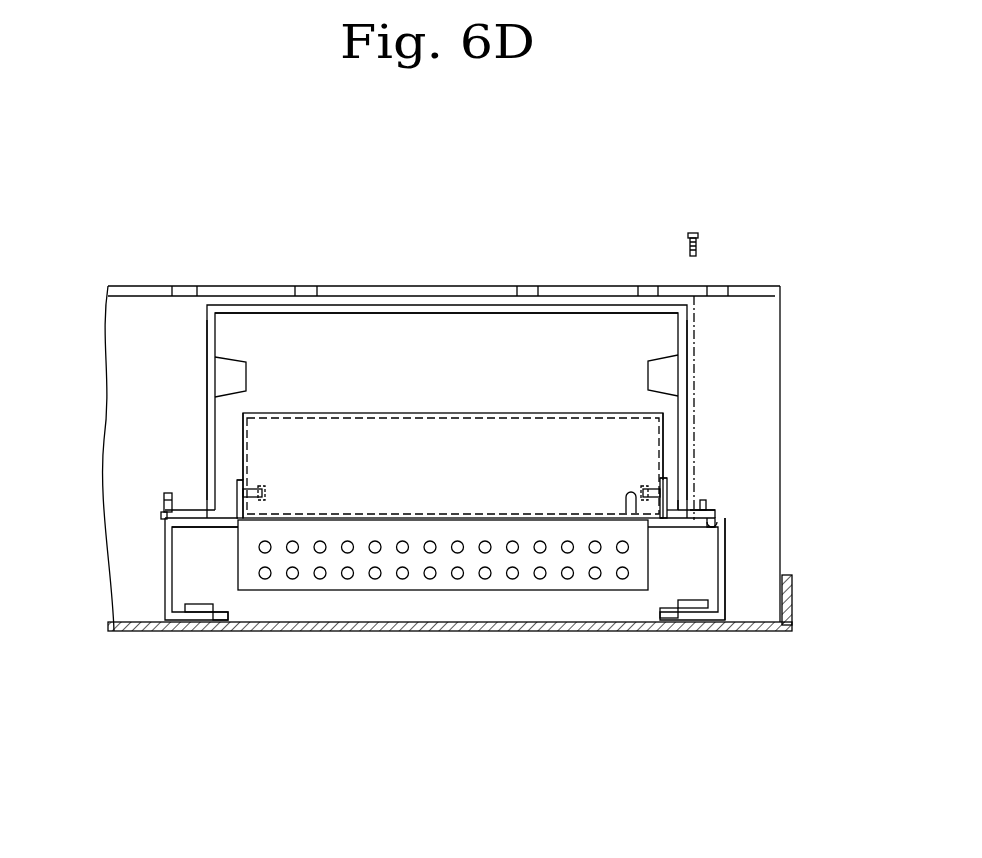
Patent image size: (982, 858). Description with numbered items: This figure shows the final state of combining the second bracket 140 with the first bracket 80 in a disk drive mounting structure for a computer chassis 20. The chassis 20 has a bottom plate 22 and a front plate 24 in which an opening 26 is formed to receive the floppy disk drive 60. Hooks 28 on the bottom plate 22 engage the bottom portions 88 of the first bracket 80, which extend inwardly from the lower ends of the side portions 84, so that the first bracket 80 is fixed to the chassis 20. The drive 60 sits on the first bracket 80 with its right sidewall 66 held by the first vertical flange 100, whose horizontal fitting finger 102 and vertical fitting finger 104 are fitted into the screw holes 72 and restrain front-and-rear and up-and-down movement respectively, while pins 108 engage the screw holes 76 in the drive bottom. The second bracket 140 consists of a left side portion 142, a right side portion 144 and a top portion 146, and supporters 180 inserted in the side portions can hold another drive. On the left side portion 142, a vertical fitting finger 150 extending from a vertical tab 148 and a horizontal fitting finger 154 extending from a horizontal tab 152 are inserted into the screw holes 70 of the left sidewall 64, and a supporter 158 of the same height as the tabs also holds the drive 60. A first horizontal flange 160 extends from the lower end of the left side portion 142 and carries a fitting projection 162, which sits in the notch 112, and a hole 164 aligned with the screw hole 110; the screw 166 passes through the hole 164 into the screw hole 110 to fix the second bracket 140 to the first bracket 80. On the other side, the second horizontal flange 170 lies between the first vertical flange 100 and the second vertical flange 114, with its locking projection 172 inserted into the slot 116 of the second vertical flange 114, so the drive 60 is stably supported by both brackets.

The chassis 20 is at (792, 322).
The bottom plate 22 is at (116, 619).
The front plate 24 is at (781, 406).
The opening 26 is at (455, 412).
The hooks 28 is at (196, 613).
The floppy disk drive 60 is at (385, 398).
The left sidewall 64 is at (689, 427).
The right sidewall 66 is at (242, 424).
The screw holes 70 is at (645, 493).
The screw holes 72 is at (263, 489).
The screw holes 76 is at (640, 491).
The first bracket 80 is at (441, 609).
The side portions 84 is at (165, 577).
The bottom portions 88 is at (221, 621).
The first vertical flange 100 is at (237, 488).
The horizontal fitting finger 102 is at (264, 492).
The vertical fitting finger 104 is at (250, 487).
The pins 108 is at (629, 501).
The screw hole 110 is at (698, 530).
The notch 112 is at (728, 545).
The second vertical flange 114 is at (164, 499).
The slot 116 is at (170, 529).
The second bracket 140 is at (206, 303).
The left side portion 142 is at (688, 359).
The right side portion 144 is at (214, 362).
The top portion 146 is at (443, 304).
The vertical tab 148 is at (688, 459).
The vertical fitting finger 150 is at (661, 513).
The horizontal tab 152 is at (668, 487).
The horizontal fitting finger 154 is at (656, 485).
The supporter 158 is at (676, 416).
The first horizontal flange 160 is at (716, 507).
The fitting projection 162 is at (720, 525).
The hole 164 is at (730, 500).
The screw 166 is at (699, 245).
The second horizontal flange 170 is at (180, 505).
The locking projection 172 is at (162, 516).
The supporters 180 is at (247, 377).